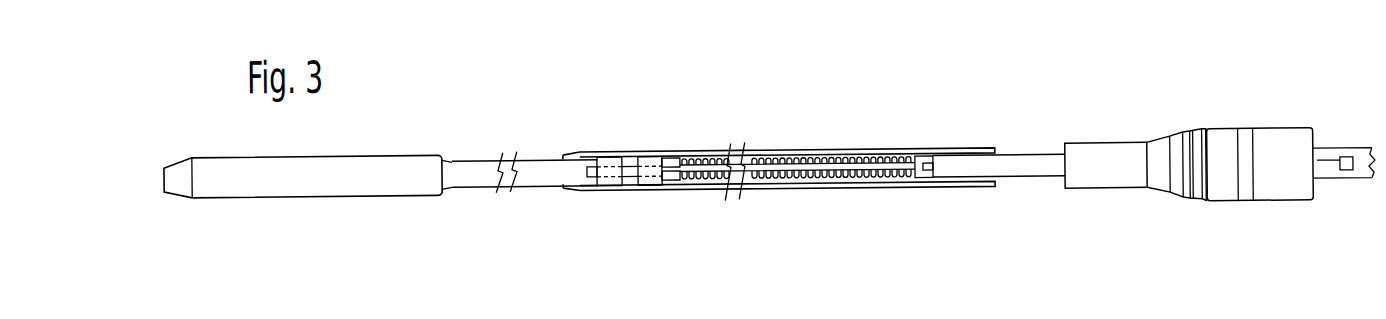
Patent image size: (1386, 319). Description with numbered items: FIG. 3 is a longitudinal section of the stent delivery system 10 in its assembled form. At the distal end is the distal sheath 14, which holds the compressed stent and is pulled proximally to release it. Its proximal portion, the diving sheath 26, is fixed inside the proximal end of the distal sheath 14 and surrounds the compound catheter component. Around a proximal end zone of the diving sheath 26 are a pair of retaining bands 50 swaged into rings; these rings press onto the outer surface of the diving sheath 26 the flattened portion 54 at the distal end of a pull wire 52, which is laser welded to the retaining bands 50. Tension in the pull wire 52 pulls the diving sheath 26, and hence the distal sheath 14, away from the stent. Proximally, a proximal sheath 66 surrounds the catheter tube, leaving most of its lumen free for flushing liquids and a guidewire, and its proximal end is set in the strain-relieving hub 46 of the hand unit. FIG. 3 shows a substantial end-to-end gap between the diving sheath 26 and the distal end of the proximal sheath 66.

The delivery system 10 is at (827, 139).
The distal sheath 14 is at (335, 183).
The diving sheath 26 is at (528, 180).
The strain-relieving hub 46 is at (1180, 144).
The retaining bands 50 is at (652, 157).
The pull wire 52 is at (922, 190).
The flattened portion 54 is at (668, 170).
The proximal sheath 66 is at (1022, 163).